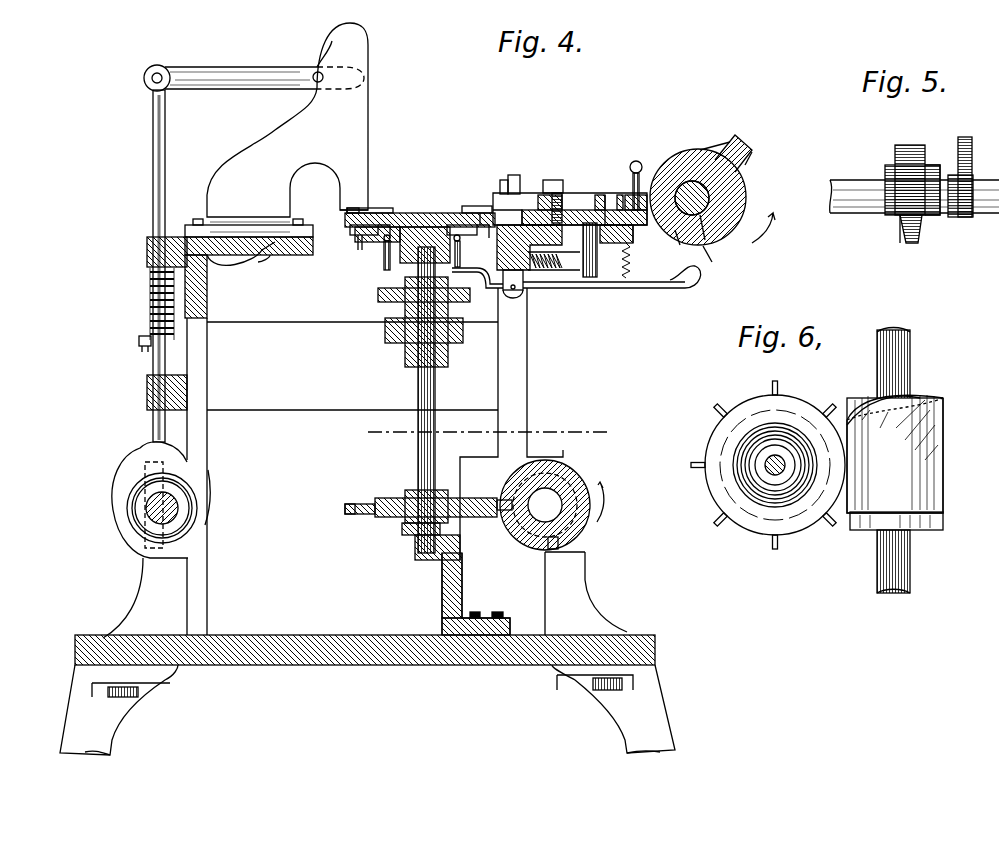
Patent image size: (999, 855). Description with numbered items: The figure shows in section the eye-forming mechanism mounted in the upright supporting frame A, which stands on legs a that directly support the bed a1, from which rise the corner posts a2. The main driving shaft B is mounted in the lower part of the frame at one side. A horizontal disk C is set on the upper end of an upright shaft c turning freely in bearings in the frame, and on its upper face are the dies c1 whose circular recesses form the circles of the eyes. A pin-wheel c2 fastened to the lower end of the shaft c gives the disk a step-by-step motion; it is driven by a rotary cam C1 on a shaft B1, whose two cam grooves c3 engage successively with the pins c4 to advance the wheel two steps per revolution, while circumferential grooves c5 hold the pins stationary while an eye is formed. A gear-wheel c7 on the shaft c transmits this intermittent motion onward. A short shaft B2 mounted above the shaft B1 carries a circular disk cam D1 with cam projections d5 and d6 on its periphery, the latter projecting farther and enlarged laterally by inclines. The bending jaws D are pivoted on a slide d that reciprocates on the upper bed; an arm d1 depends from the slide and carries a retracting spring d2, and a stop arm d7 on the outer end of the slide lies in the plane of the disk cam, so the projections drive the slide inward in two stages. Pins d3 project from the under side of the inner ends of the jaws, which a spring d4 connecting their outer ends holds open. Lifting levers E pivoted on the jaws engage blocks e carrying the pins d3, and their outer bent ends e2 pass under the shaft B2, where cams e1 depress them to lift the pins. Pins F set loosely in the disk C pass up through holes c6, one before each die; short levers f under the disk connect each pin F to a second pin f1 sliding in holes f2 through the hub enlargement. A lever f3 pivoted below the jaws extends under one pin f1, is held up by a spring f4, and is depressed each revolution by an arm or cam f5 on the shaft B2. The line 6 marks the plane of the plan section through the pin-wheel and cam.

In FIG. 4, the upright supporting frame A is at (351, 366).
In FIG. 4, the legs a is at (367, 710).
In FIG. 4, the bed a1 is at (310, 632).
In FIG. 4, the corner posts a2 is at (215, 570).
In FIG. 4, the main driving shaft B is at (162, 505).
In FIG. 5, the main driving shaft B is at (968, 215).
In FIG. 4, the shaft B1 is at (585, 556).
In FIG. 6, the shaft B1 is at (878, 580).
In FIG. 4, the short shaft B2 is at (712, 262).
In FIG. 4, the horizontal disk C is at (425, 222).
In FIG. 4, the upright shaft c is at (437, 388).
In FIG. 4, the rotary cam C1 is at (580, 483).
In FIG. 6, the rotary cam C1 is at (895, 454).
In FIG. 4, the dies c1 is at (470, 212).
In FIG. 4, the pin-wheel c2 is at (380, 500).
In FIG. 6, the pin-wheel c2 is at (760, 440).
In FIG. 4, the cam grooves c3 is at (500, 498).
In FIG. 6, the cam grooves c3 is at (872, 402).
In FIG. 4, the pins c4 is at (355, 512).
In FIG. 6, the pins c4 is at (698, 450).
In FIG. 4, the circumferential grooves c5 is at (548, 550).
In FIG. 6, the circumferential grooves c5 is at (872, 520).
In FIG. 4, the holes c6 is at (352, 218).
In FIG. 4, the gear-wheel c7 is at (388, 328).
In FIG. 4, the section line 6 is at (487, 432).
In FIG. 4, the bending jaws D is at (588, 195).
In FIG. 4, the slide d is at (608, 195).
In FIG. 4, the circular disk cam D1 is at (748, 190).
In FIG. 5, the circular disk cam D1 is at (900, 222).
In FIG. 4, the arm d1 is at (590, 278).
In FIG. 4, the spring d2 is at (560, 272).
In FIG. 4, the pins d3 is at (514, 175).
In FIG. 4, the spring d4 is at (640, 165).
In FIG. 4, the cam projection d5 is at (705, 152).
In FIG. 4, the cam projection d6 is at (752, 155).
In FIG. 5, the cam projection d6 is at (908, 160).
In FIG. 4, the stop arm d7 is at (640, 215).
In FIG. 4, the lifting levers E is at (557, 180).
In FIG. 4, the blocks e is at (503, 180).
In FIG. 5, the blocks e is at (885, 176).
In FIG. 4, the cams e1 is at (708, 240).
In FIG. 5, the cams e1 is at (932, 165).
In FIG. 4, the outer bent ends e2 is at (687, 249).
In FIG. 4, the pins F is at (347, 240).
In FIG. 4, the short levers f is at (350, 255).
In FIG. 5, the short levers f is at (972, 150).
In FIG. 4, the second pin f1 is at (409, 260).
In FIG. 4, the holes f2 is at (384, 262).
In FIG. 4, the lever f3 is at (468, 270).
In FIG. 4, the spring f4 is at (628, 278).
In FIG. 4, the arm or cam f5 is at (742, 140).